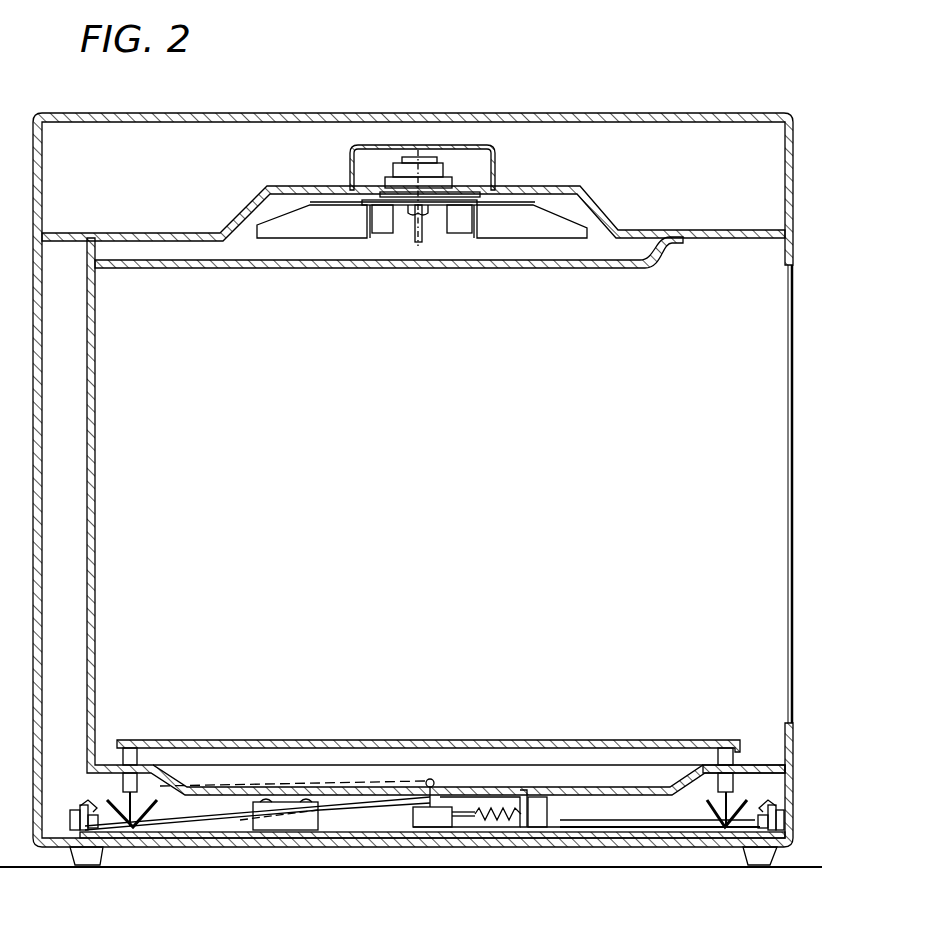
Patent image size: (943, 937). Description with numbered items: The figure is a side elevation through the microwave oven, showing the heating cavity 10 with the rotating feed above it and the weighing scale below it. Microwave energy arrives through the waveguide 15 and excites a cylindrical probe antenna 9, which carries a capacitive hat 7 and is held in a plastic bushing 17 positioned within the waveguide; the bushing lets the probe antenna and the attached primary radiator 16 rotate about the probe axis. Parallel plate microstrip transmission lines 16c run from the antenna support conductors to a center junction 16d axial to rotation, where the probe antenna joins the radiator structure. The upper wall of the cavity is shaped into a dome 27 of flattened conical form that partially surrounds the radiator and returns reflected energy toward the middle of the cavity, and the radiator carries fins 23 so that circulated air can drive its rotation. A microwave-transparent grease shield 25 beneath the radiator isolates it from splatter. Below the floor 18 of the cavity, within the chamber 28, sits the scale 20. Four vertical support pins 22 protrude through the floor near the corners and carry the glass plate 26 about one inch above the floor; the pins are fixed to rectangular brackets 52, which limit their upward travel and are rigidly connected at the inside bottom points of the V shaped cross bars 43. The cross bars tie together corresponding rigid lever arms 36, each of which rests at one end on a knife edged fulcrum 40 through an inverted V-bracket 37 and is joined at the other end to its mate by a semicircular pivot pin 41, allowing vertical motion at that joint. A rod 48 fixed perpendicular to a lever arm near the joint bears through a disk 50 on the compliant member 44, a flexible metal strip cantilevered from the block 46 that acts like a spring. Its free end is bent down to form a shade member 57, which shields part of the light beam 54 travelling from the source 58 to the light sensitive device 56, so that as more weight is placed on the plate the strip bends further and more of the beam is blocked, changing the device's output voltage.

The capacitive hat 7 is at (430, 160).
The probe antenna 9 is at (398, 158).
The heating cavity 10 is at (204, 421).
The waveguide 15 is at (478, 172).
The primary radiator 16 is at (347, 243).
The parallel plate microstrip transmission lines 16c is at (478, 195).
The center junction 16d is at (432, 203).
The plastic bushing 17 is at (400, 170).
The floor 18 is at (700, 770).
The scale 20 is at (595, 829).
The vertical support pins 22 is at (137, 753).
The fins 23 is at (540, 240).
The grease shield 25 is at (214, 270).
The plate 26 is at (687, 740).
The dome 27 is at (598, 208).
The chamber 28 is at (778, 770).
The lever arms 36 is at (232, 833).
The inverted V-bracket 37 is at (92, 803).
The knife edged fulcrum 40 is at (85, 806).
The semicircular pivot pin 41 is at (425, 828).
The V shaped cross bar 43 is at (153, 809).
The compliant member 44 is at (355, 812).
The block 46 is at (295, 822).
The rod 48 is at (428, 780).
The disk 50 is at (436, 781).
The rectangular brackets 52 is at (112, 770).
The light beam 54 is at (516, 812).
The light sensitive device 56 is at (560, 810).
The shade member 57 is at (535, 796).
The source 58 is at (452, 826).